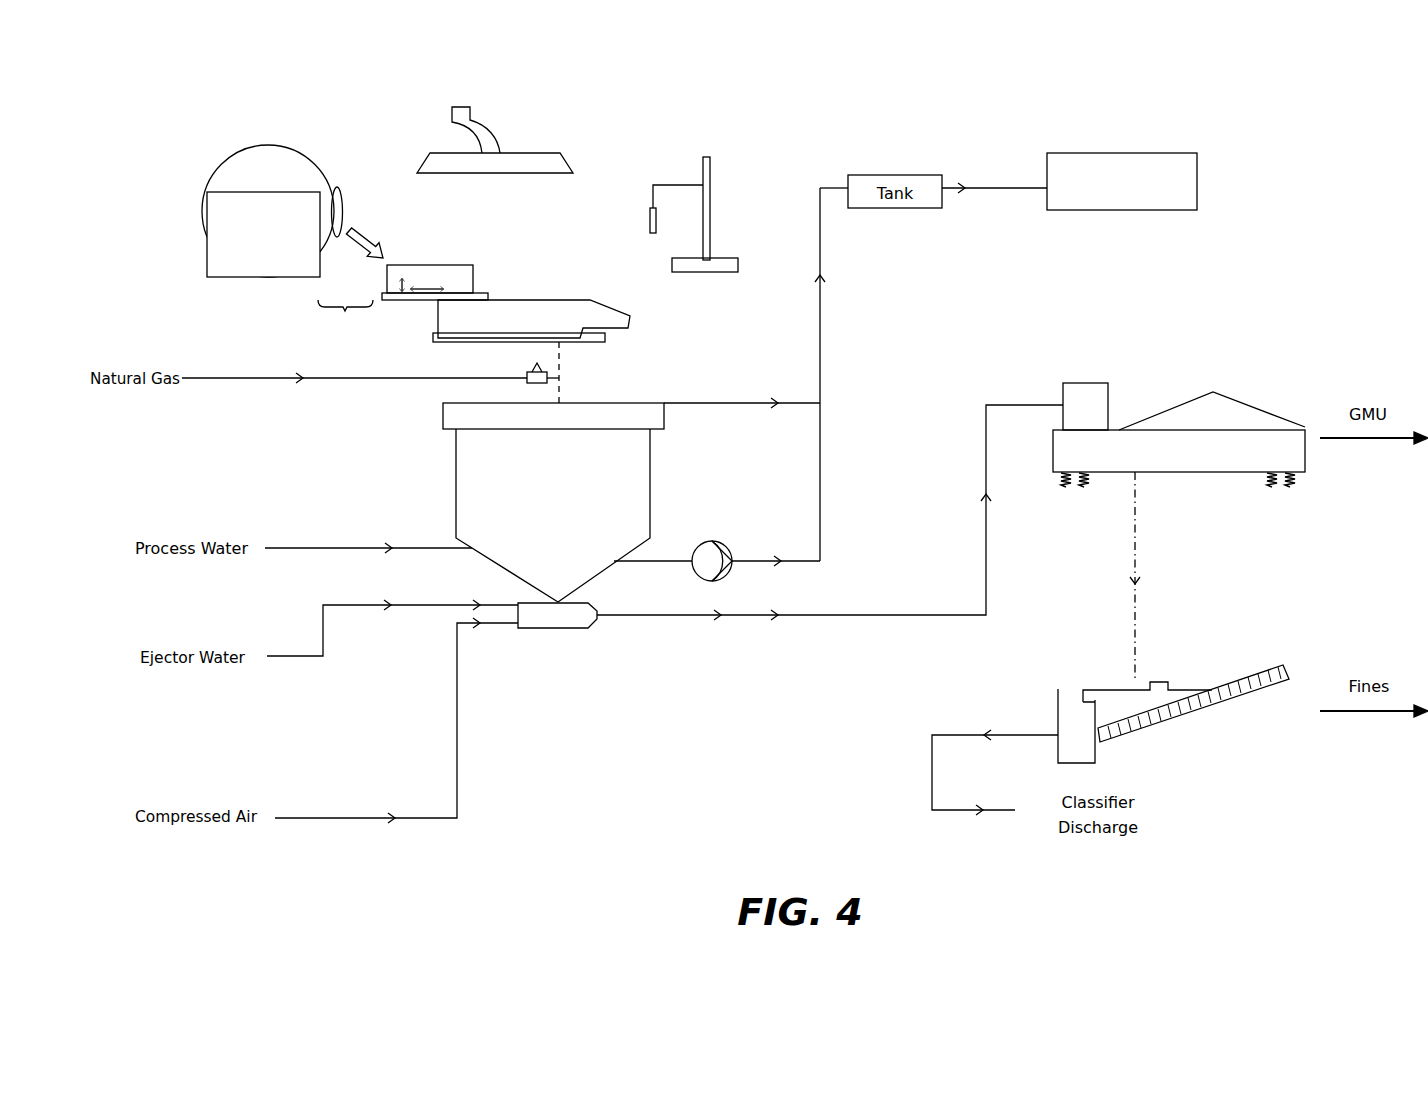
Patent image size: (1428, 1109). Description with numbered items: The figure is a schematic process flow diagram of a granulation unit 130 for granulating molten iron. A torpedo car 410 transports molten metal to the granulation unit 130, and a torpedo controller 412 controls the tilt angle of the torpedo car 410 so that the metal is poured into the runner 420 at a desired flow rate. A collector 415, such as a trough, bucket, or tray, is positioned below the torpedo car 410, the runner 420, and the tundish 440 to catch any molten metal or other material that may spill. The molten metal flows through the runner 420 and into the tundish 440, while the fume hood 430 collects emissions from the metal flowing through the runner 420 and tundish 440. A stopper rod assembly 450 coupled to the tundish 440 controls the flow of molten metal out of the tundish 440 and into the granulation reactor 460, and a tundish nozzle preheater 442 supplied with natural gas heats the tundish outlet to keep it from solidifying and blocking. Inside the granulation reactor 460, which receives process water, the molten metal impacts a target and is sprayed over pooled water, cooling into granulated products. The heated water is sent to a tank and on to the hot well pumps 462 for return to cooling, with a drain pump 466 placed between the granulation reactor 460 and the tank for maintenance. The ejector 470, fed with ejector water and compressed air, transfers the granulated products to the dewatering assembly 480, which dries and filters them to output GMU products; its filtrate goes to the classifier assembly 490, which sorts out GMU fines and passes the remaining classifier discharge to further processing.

The granulation unit 130 is at (156, 95).
The torpedo car 410 is at (292, 236).
The torpedo controller 412 is at (263, 234).
The collector 415 is at (343, 327).
The runner 420 is at (435, 271).
The fume hood 430 is at (502, 138).
The tundish 440 is at (531, 342).
The tundish nozzle preheater 442 is at (550, 381).
The stopper rod assembly 450 is at (687, 202).
The granulation reactor 460 is at (553, 502).
The hot well pumps 462 is at (1122, 181).
The drain pump 466 is at (710, 539).
The ejector 470 is at (557, 640).
The dewatering assembly 480 is at (1179, 532).
The classifier assembly 490 is at (1173, 728).